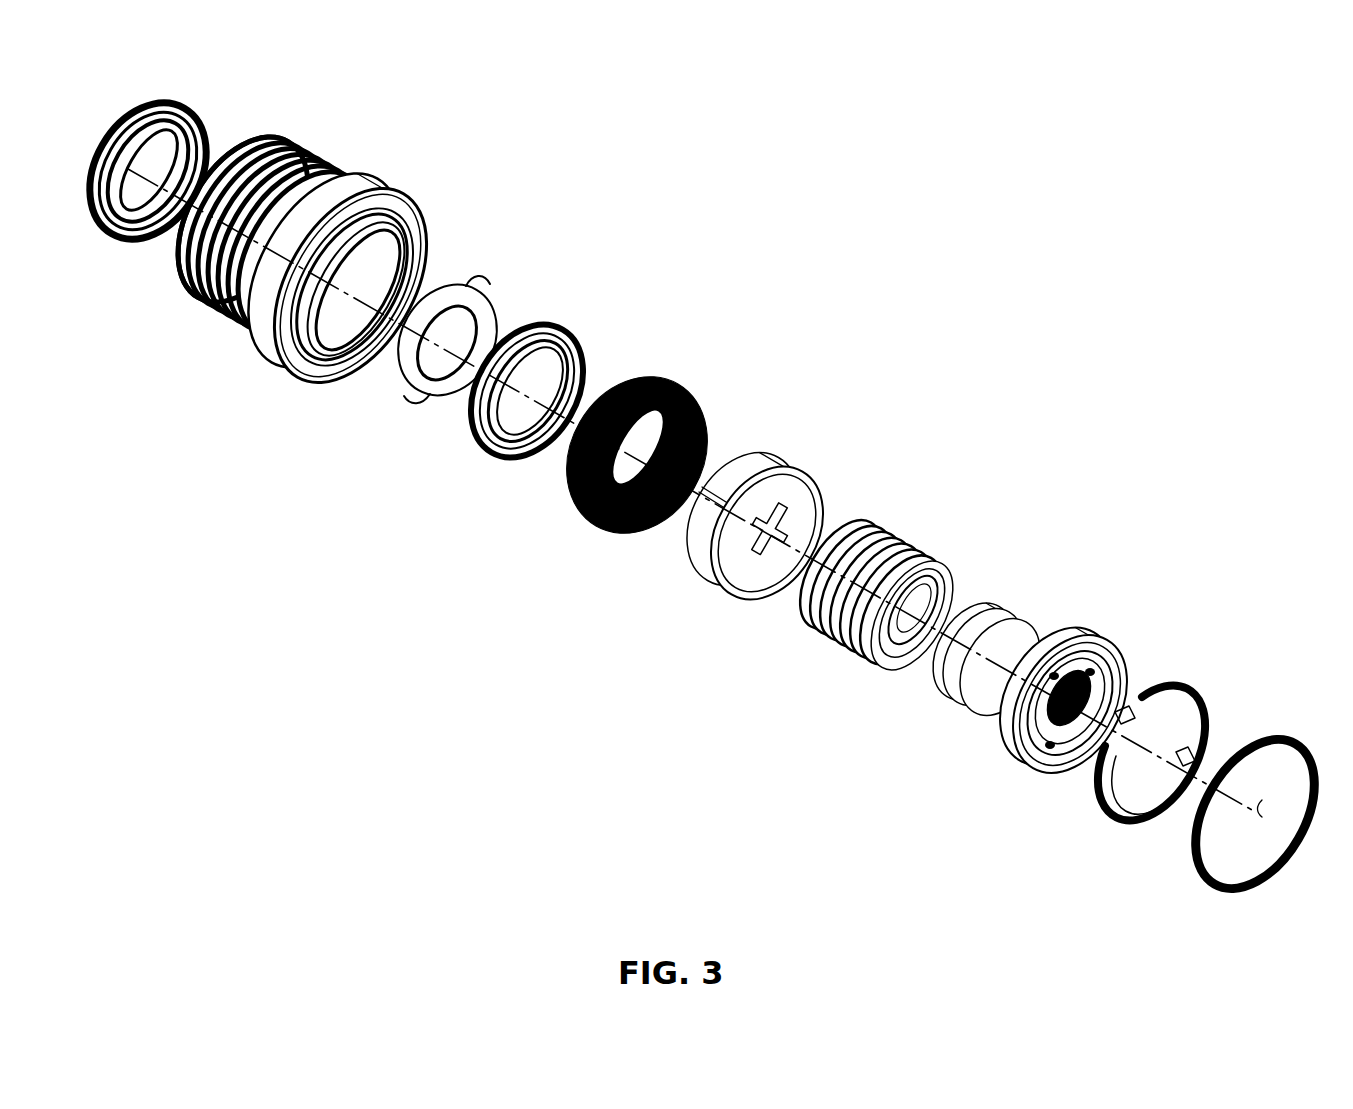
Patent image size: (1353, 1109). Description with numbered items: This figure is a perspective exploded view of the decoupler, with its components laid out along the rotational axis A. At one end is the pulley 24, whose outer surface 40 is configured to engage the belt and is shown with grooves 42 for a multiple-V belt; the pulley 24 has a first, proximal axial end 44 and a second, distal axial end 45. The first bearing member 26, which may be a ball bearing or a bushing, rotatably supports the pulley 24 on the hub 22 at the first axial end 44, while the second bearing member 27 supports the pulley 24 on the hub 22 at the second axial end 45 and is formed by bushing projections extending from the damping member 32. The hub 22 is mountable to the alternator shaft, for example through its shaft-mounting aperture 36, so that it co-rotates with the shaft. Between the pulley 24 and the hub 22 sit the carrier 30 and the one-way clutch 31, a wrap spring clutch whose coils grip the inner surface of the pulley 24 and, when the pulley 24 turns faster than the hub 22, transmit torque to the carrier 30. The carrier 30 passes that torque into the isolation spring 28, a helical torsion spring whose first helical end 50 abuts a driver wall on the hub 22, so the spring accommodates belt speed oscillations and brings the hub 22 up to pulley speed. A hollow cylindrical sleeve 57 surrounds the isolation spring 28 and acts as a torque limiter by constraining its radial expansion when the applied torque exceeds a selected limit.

The hub 22 is at (1020, 632).
The pulley 24 is at (337, 170).
The first bearing member 26 is at (180, 104).
The second bearing member 27 is at (1112, 787).
The isolation spring 28 is at (883, 537).
The carrier 30 is at (550, 322).
The one-way clutch 31 is at (657, 380).
The damping member 32 is at (1160, 805).
The shaft-mounting aperture 36 is at (1083, 667).
The outer surface 40 is at (328, 170).
The grooves 42 is at (288, 140).
The first axial end 44 is at (193, 322).
The second axial end 45 is at (287, 353).
The first helical end 50 is at (913, 575).
The sleeve 57 is at (763, 455).
The axis A is at (709, 493).